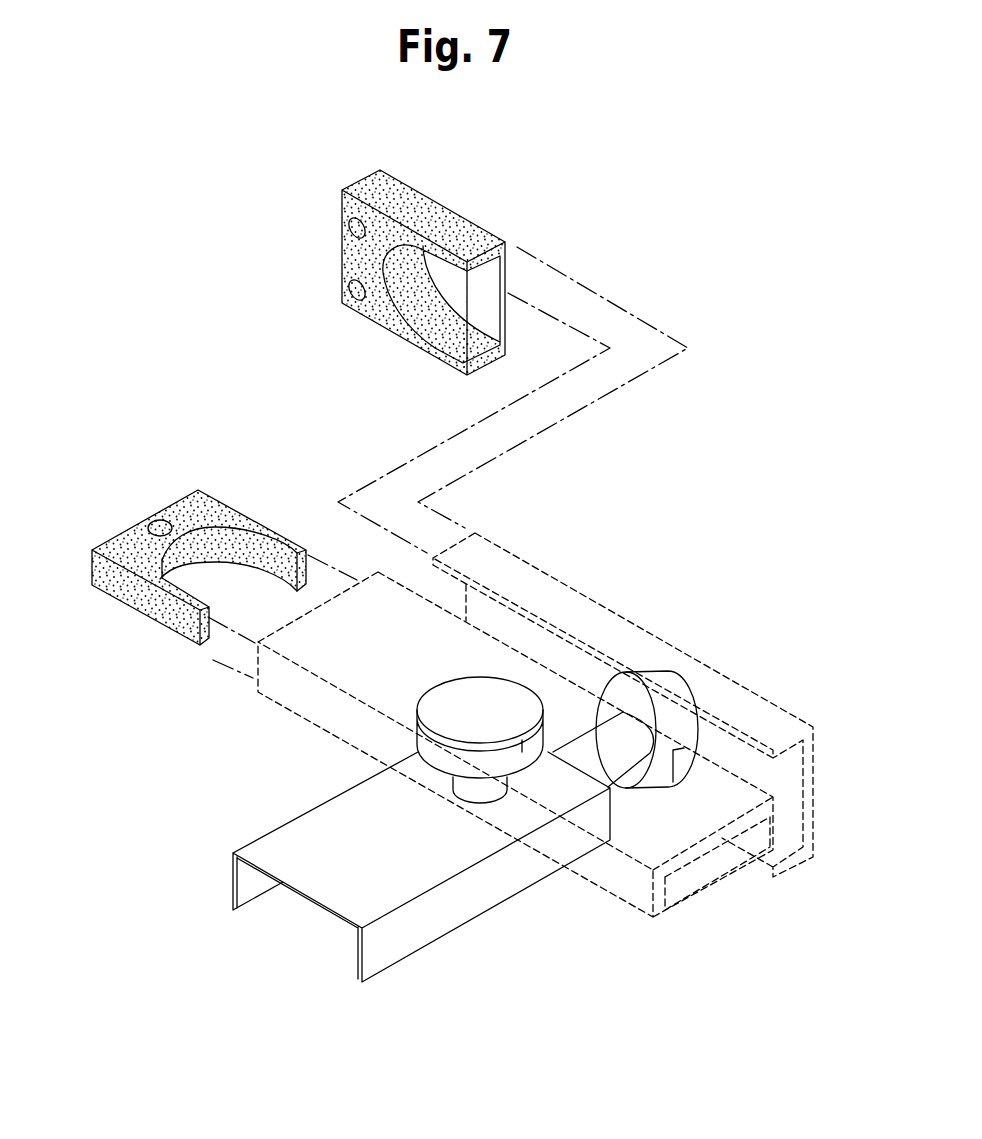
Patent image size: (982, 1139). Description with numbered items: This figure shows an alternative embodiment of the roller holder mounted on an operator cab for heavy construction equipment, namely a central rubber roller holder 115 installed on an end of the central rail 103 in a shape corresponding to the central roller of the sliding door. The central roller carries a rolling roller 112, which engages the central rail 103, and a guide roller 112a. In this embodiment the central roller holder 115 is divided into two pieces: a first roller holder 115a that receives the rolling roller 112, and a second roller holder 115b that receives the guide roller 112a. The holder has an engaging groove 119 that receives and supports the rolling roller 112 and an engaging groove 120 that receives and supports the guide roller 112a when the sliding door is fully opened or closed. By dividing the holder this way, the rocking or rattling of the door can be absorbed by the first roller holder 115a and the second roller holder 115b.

The central rail 103 is at (686, 857).
The rolling roller 112 is at (673, 697).
The guide roller 112a is at (505, 692).
The central rubber roller holder 115 is at (166, 302).
The first roller holder 115a is at (342, 303).
The second roller holder 115b is at (195, 502).
The engaging groove 119 is at (455, 307).
The engaging groove 120 is at (223, 588).